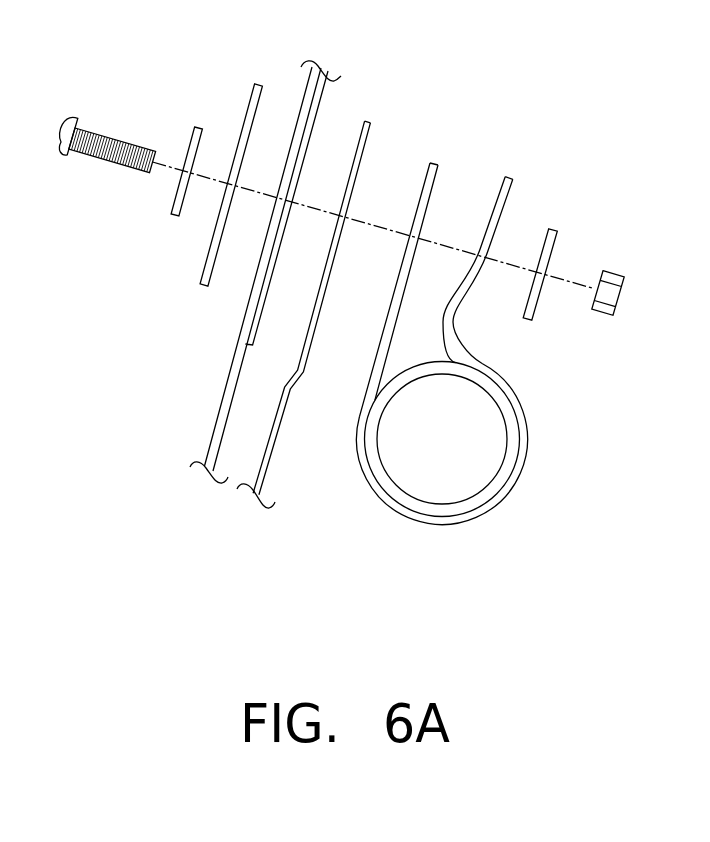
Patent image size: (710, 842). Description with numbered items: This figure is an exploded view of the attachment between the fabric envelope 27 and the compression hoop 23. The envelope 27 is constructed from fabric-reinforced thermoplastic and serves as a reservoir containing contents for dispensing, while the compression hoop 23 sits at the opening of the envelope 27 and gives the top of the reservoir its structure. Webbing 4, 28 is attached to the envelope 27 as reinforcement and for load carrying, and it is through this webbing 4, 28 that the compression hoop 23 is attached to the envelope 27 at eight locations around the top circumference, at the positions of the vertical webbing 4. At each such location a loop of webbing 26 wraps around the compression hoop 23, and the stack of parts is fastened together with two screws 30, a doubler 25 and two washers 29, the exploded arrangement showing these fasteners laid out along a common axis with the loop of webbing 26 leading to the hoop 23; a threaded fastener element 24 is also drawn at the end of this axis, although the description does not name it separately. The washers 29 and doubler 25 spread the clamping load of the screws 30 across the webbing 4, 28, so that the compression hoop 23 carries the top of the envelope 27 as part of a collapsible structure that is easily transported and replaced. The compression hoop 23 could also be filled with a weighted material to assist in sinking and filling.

The webbing 4 is at (318, 108).
The compression hoop 23 is at (508, 383).
The nut 24 is at (622, 265).
The doubler 25 is at (563, 225).
The loop of webbing 26 is at (517, 173).
The envelope 27 is at (288, 392).
The webbing 28 is at (202, 288).
The washers 29 is at (205, 122).
The screws 30 is at (78, 112).